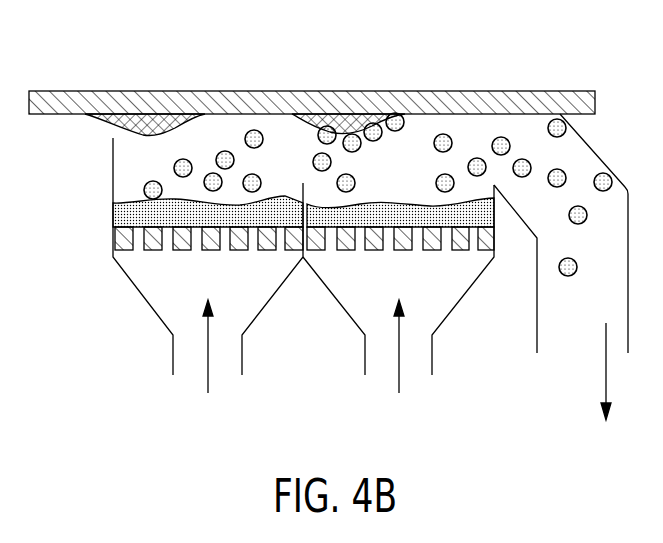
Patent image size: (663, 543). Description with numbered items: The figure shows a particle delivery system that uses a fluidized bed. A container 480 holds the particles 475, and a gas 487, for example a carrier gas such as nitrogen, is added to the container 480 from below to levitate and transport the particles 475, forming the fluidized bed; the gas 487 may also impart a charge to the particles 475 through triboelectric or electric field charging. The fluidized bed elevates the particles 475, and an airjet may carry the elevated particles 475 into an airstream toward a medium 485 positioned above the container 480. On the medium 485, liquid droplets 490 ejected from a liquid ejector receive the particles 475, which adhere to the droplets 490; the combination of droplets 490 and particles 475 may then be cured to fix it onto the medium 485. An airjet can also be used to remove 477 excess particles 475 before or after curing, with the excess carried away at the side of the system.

The particles 475 is at (144, 190).
The removal of excess particles 477 is at (605, 375).
The container 480 is at (146, 335).
The medium 485 is at (62, 91).
The gas 487 is at (205, 375).
The liquid droplets 490 is at (143, 117).